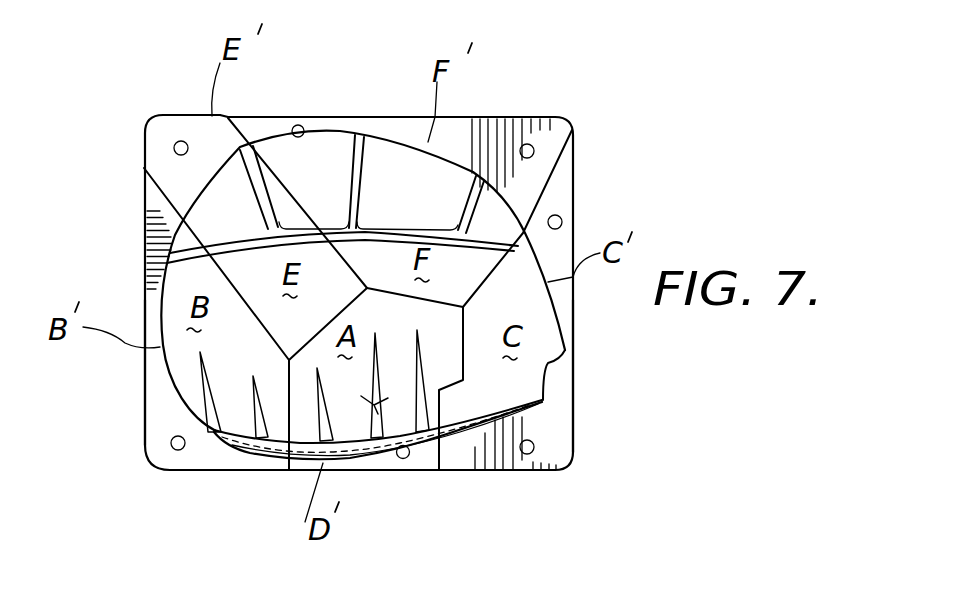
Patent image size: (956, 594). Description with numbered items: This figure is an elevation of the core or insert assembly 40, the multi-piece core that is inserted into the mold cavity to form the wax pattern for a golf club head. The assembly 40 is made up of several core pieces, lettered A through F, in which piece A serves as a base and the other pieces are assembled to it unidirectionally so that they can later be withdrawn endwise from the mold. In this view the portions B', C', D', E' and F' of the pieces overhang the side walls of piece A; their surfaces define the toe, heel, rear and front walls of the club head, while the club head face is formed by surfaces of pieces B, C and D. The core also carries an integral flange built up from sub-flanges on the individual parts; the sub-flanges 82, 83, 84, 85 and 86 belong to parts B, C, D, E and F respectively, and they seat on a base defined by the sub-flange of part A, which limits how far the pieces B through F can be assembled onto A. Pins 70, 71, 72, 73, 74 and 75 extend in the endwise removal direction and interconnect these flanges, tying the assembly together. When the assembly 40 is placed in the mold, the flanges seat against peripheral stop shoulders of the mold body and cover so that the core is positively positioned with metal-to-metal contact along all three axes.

The core or insert assembly 40 is at (231, 477).
The pin 70 is at (537, 447).
The pin 71 is at (170, 443).
The pin 72 is at (408, 462).
The pin 73 is at (562, 219).
The pin 74 is at (298, 125).
The pin 75 is at (173, 146).
The sub-flange 82 is at (150, 393).
The sub-flange 83 is at (563, 390).
The sub-flange 84 is at (378, 463).
The sub-flange 85 is at (165, 116).
The sub-flange 86 is at (513, 117).